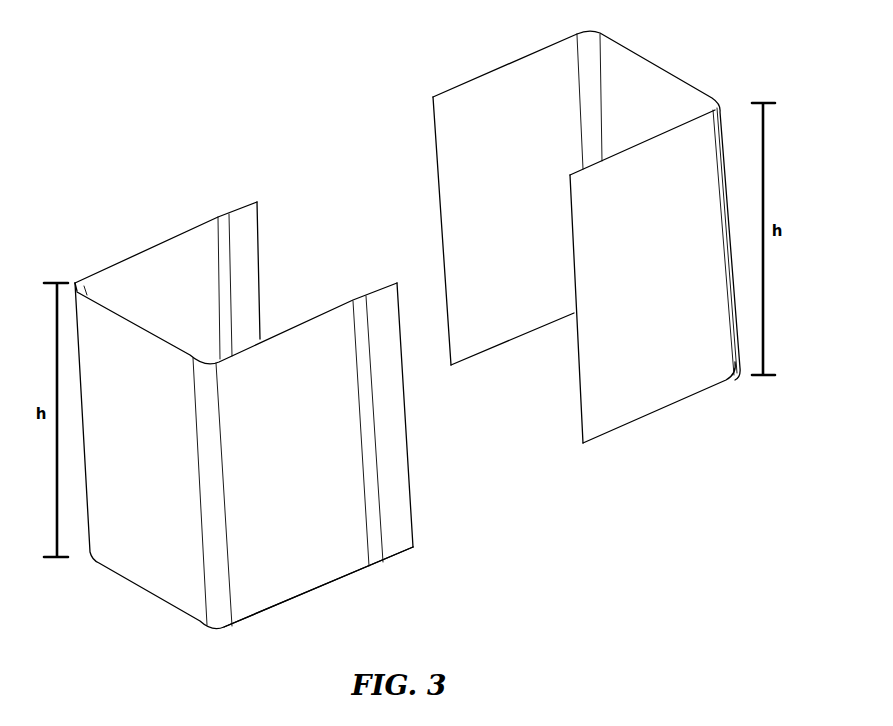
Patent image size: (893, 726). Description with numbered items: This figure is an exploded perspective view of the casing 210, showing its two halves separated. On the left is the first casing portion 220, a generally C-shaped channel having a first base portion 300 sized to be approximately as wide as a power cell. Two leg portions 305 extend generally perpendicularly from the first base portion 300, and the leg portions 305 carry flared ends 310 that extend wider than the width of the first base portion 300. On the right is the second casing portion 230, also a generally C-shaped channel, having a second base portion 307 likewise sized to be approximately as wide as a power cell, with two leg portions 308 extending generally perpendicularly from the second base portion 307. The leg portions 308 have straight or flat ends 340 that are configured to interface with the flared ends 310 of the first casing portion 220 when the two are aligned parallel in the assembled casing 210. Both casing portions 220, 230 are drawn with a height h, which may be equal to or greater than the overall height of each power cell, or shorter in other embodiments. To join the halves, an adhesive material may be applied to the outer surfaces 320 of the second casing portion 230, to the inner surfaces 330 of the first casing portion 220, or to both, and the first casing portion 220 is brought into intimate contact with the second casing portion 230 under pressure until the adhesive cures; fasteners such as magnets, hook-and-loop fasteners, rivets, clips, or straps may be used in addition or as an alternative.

The casing 210 is at (300, 114).
The first base portion 300 is at (139, 571).
The leg portions 305 is at (147, 248).
The flared ends 310 is at (243, 203).
The inner surfaces 330 is at (248, 248).
The first casing portion 220 is at (293, 587).
The second casing portion 230 is at (657, 400).
The leg portions 308 is at (520, 65).
The second base portion 307 is at (663, 60).
The flat ends 340 is at (436, 141).
The outer surfaces 320 is at (451, 219).